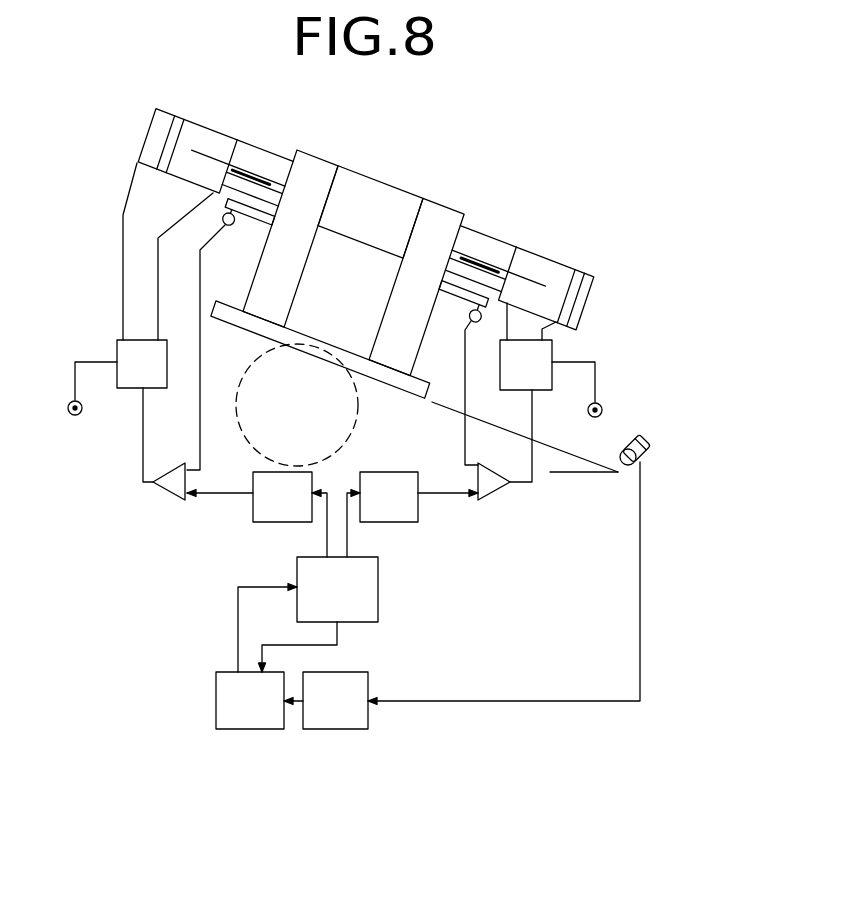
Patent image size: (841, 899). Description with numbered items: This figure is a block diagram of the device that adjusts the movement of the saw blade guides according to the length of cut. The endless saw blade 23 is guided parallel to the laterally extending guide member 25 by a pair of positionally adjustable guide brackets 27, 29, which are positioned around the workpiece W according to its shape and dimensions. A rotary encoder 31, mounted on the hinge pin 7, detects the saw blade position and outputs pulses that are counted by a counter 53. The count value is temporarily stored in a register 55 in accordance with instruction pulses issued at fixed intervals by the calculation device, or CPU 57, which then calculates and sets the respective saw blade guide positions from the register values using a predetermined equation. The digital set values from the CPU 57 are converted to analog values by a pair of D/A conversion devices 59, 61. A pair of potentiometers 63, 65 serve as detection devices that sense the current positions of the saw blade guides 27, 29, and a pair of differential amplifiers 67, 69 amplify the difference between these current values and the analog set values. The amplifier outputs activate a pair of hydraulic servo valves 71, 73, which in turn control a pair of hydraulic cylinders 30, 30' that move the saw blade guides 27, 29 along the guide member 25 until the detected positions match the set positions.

The hinge pin 7 is at (617, 477).
The saw blade 23 is at (308, 332).
The guide member 25 is at (383, 199).
The guide bracket 27 is at (457, 212).
The guide bracket 29 is at (327, 162).
The hydraulic cylinder 30 is at (215, 145).
The hydraulic cylinder 30' is at (519, 262).
The rotary encoder 31 is at (644, 441).
The counter 53 is at (348, 731).
The register 55 is at (253, 731).
The calculation device 57 is at (379, 593).
The D/A conversion device 59 is at (402, 523).
The D/A conversion device 61 is at (272, 523).
The potentiometer 63 is at (470, 319).
The potentiometer 65 is at (228, 226).
The differential amplifier 67 is at (490, 501).
The differential amplifier 69 is at (186, 501).
The hydraulic servo valve 71 is at (554, 380).
The hydraulic servo valve 73 is at (124, 390).
The workpiece W is at (308, 422).